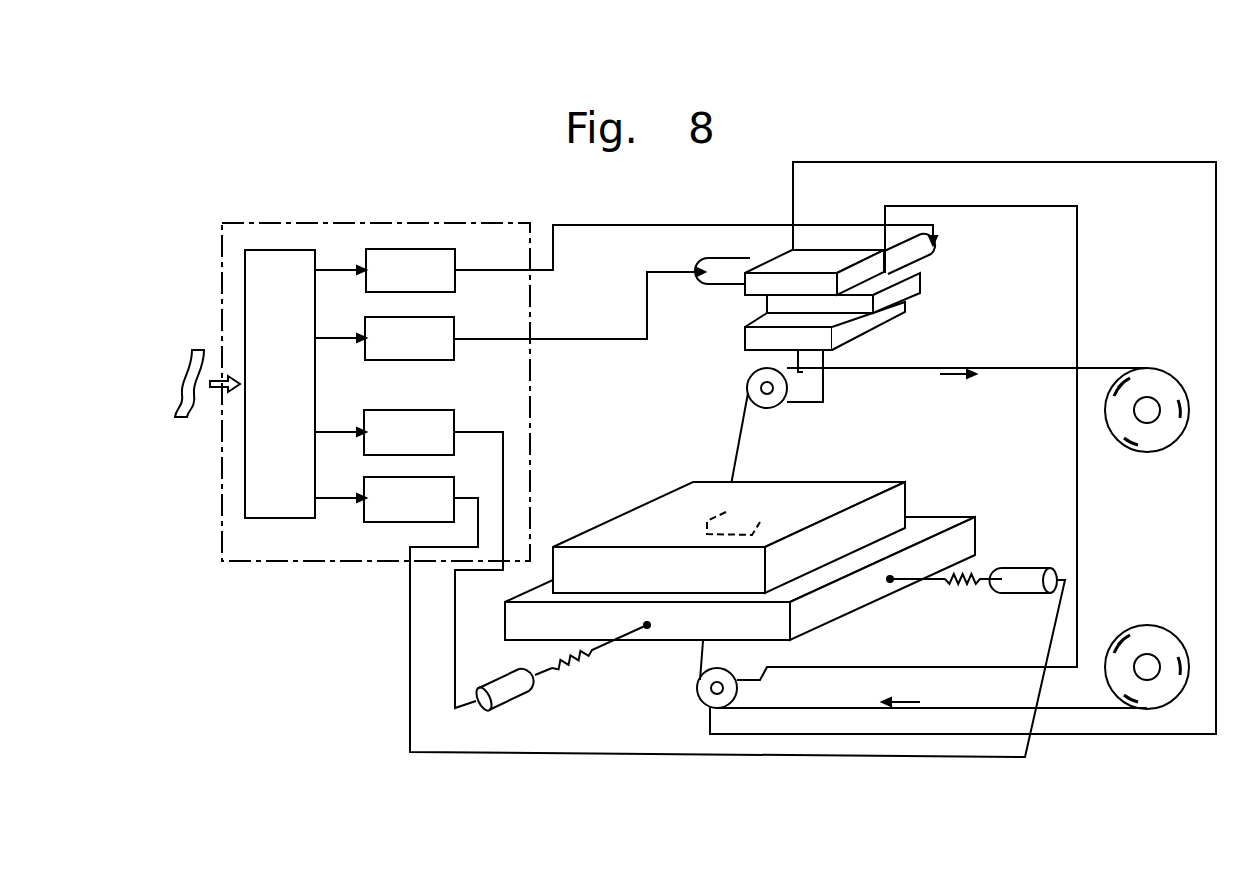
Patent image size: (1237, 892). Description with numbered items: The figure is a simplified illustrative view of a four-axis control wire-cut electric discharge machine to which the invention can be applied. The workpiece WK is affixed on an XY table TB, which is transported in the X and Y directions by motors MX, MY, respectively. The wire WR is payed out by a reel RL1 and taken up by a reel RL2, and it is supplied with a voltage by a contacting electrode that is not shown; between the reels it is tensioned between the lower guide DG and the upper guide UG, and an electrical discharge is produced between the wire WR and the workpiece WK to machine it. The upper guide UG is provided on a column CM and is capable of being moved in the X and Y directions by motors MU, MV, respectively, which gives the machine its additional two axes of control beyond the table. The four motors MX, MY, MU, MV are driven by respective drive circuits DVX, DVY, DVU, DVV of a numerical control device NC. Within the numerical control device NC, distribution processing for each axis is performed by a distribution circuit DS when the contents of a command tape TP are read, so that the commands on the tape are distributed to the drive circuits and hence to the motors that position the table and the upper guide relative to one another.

The numerical control device NC is at (455, 223).
The distribution circuit DS is at (305, 384).
The drive circuit DVV is at (410, 270).
The drive circuit DVU is at (409, 338).
The drive circuit DVY is at (409, 432).
The drive circuit DVX is at (409, 499).
The command tape TP is at (182, 418).
The motor MU is at (750, 258).
The motor MV is at (931, 254).
The column CM is at (1077, 292).
The wire WR is at (740, 433).
The upper guide UG is at (773, 406).
The workpiece WK is at (865, 482).
The XY table TB is at (932, 514).
The motor MX is at (1027, 566).
The motor MY is at (520, 698).
The lower guide DG is at (700, 697).
The reel RL1 is at (1144, 625).
The reel RL2 is at (1147, 453).